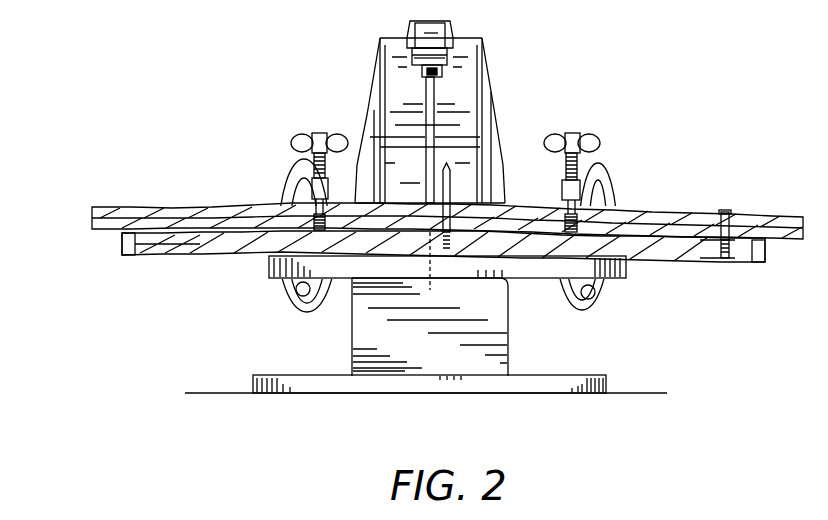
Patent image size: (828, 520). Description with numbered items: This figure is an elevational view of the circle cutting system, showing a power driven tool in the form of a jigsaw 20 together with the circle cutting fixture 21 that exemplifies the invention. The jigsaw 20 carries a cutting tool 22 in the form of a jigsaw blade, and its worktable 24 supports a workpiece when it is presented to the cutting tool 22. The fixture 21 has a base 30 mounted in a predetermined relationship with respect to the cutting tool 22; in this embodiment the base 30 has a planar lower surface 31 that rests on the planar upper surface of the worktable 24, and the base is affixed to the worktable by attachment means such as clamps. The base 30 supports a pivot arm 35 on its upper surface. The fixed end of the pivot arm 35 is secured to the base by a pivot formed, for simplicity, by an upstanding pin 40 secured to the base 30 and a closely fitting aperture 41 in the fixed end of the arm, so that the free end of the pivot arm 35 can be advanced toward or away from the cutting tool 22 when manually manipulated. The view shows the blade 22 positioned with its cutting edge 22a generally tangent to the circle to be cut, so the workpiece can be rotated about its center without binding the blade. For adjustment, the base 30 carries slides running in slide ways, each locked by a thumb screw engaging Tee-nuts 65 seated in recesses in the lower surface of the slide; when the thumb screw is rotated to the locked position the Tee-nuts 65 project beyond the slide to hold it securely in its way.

The jigsaw 20 is at (494, 120).
The circle cutting fixture 21 is at (427, 251).
The cutting tool 22 is at (434, 95).
The cutting edge 22a is at (452, 162).
The worktable 24 is at (627, 278).
The base 30 is at (128, 243).
The planar lower surface 31 is at (676, 259).
The pivot arm 35 is at (768, 218).
The upstanding pin 40 is at (728, 210).
The aperture 41 is at (722, 212).
The Tee-nuts 65 is at (127, 255).